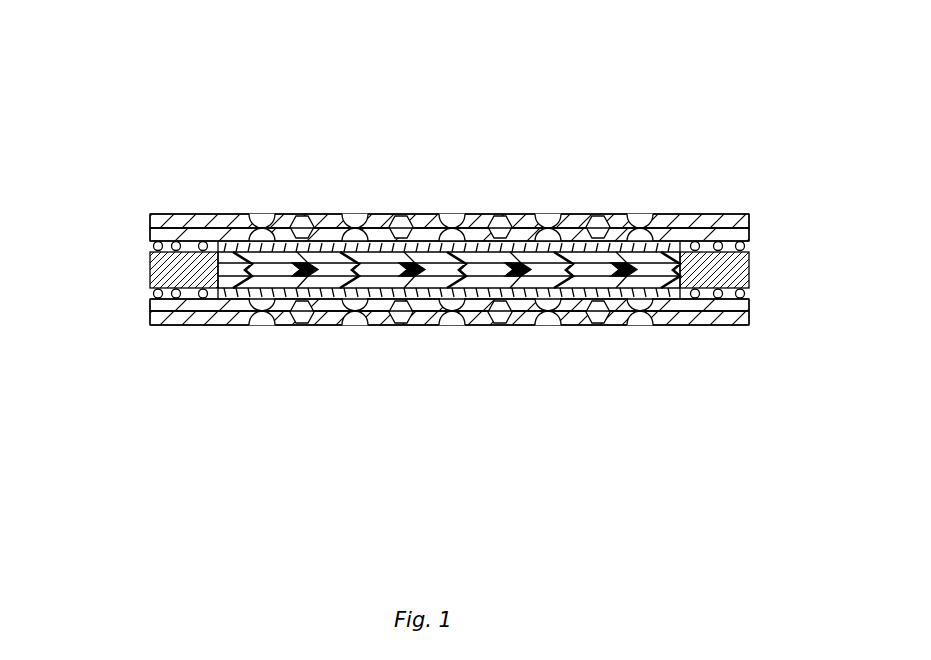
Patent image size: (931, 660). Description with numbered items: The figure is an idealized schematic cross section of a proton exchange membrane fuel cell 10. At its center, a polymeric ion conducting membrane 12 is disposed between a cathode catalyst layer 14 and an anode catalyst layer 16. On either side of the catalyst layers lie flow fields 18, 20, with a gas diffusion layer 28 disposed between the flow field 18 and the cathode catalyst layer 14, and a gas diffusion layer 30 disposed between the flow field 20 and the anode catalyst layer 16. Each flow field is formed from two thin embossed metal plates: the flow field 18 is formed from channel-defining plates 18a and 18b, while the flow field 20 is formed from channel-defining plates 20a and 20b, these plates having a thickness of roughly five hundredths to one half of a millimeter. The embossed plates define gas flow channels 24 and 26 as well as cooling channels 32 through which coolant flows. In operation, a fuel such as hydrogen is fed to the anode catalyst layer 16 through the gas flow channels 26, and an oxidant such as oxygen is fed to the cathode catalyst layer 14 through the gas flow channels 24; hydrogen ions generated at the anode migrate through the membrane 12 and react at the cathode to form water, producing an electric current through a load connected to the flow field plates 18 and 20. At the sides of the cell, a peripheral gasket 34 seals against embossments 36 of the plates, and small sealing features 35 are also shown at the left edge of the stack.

The proton exchange membrane fuel cell 10 is at (147, 89).
The polymeric ion conducting membrane 12 is at (229, 262).
The cathode catalyst layer 14 is at (283, 257).
The anode catalyst layer 16 is at (605, 282).
The flow field 18 is at (414, 206).
The channel-defining plate 18a is at (148, 219).
The channel-defining plate 18b is at (148, 232).
The flow field 20 is at (416, 317).
The channel-defining plate 20a is at (148, 318).
The channel-defining plate 20b is at (148, 302).
The gas flow channel 24 is at (352, 228).
The gas flow channel 26 is at (360, 223).
The gas diffusion layer 28 is at (645, 228).
The gas diffusion layer 30 is at (642, 282).
The cooling channel 32 is at (400, 222).
The peripheral gasket 34 is at (150, 267).
The spacer bead 35 is at (178, 242).
The embossment 36 is at (720, 242).